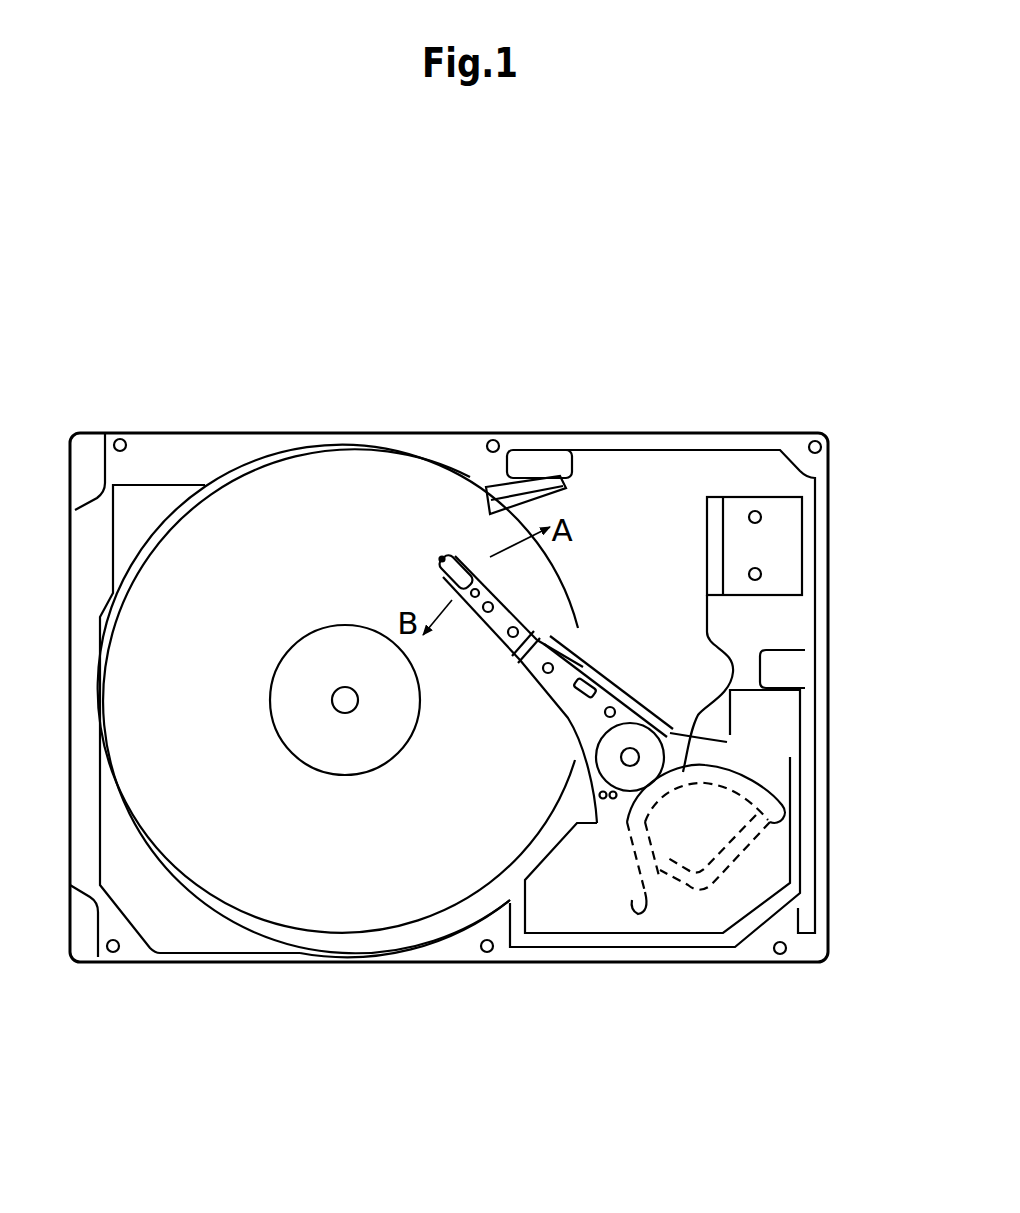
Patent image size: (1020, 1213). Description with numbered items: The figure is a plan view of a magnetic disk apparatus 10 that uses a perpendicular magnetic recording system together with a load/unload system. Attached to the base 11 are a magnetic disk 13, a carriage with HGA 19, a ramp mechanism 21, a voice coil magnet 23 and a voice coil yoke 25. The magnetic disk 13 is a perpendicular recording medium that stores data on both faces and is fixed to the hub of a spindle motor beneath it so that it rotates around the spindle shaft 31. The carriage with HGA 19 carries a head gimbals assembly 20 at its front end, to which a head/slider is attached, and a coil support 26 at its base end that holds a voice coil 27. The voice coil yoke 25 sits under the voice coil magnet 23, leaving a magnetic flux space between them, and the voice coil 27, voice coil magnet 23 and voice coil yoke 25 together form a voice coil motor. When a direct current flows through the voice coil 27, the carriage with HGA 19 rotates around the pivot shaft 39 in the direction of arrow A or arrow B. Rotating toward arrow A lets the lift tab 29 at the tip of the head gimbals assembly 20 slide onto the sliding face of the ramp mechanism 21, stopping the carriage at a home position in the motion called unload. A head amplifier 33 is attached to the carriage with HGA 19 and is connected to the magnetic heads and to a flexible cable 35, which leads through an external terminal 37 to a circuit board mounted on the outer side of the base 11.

The magnetic disk apparatus 10 is at (362, 428).
The base 11 is at (672, 478).
The magnetic disk 13 is at (348, 862).
The carriage with HGA 19 is at (518, 703).
The head gimbals assembly 20 is at (484, 645).
The ramp mechanism 21 is at (537, 478).
The voice coil magnet 23 is at (815, 688).
The voice coil yoke 25 is at (800, 678).
The coil support 26 is at (617, 890).
The voice coil 27 is at (700, 880).
The lift tab 29 is at (448, 556).
The spindle shaft 31 is at (333, 698).
The head amplifier 33 is at (632, 703).
The flexible cable 35 is at (752, 627).
The external terminal 37 is at (790, 545).
The pivot shaft 39 is at (637, 753).